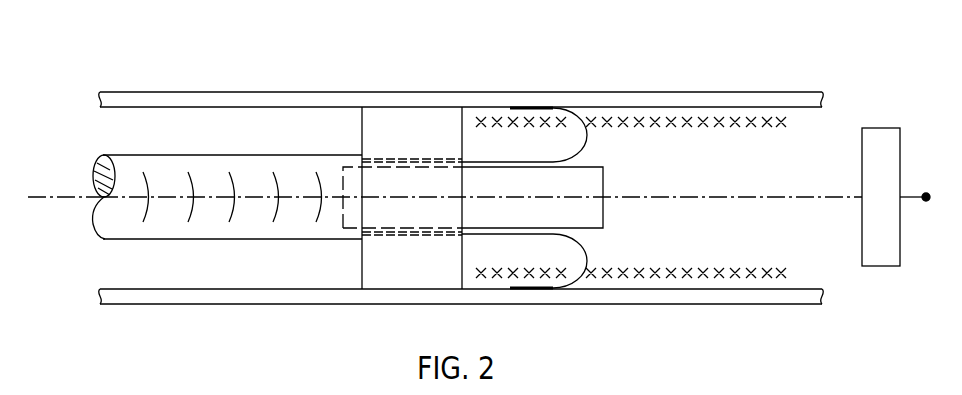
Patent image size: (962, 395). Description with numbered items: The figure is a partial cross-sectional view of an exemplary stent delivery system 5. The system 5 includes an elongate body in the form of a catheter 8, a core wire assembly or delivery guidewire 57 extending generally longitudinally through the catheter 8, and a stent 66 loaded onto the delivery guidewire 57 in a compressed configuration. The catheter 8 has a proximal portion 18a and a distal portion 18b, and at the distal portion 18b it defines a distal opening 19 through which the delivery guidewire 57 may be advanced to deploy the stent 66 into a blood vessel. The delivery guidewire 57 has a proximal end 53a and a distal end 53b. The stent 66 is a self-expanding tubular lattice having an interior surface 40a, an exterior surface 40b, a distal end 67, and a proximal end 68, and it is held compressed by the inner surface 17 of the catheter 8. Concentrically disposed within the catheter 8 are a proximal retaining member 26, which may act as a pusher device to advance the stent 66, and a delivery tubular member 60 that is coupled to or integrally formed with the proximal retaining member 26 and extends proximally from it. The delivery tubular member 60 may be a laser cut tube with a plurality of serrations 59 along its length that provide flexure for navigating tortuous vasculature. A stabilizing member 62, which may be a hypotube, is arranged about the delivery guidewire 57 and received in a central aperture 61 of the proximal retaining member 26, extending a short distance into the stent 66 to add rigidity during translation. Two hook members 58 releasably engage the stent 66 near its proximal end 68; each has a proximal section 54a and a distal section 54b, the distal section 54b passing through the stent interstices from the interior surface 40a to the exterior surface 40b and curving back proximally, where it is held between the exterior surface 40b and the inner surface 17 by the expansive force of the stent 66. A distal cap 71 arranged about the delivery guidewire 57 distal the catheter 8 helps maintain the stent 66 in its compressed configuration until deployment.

The stent delivery system 5 is at (553, 42).
The catheter 8 is at (303, 98).
The inner surface 17 is at (270, 108).
The proximal portion 18a is at (98, 102).
The distal portion 18b is at (824, 98).
The distal opening 19 is at (826, 128).
The proximal retaining member 26 is at (387, 117).
The interior surface 40a is at (635, 277).
The exterior surface 40b is at (676, 271).
The proximal end 53a is at (28, 197).
The distal end 53b is at (926, 193).
The proximal section 54a is at (367, 159).
The distal section 54b is at (540, 108).
The delivery guidewire 57 is at (774, 197).
The hook member 58 is at (587, 142).
The serrations 59 is at (143, 173).
The delivery tubular member 60 is at (143, 163).
The central aperture 61 is at (398, 228).
The stabilizing member 62 is at (603, 183).
The stent 66 is at (645, 120).
The distal end 67 is at (778, 116).
The proximal end 68 is at (480, 114).
The distal cap 71 is at (882, 133).